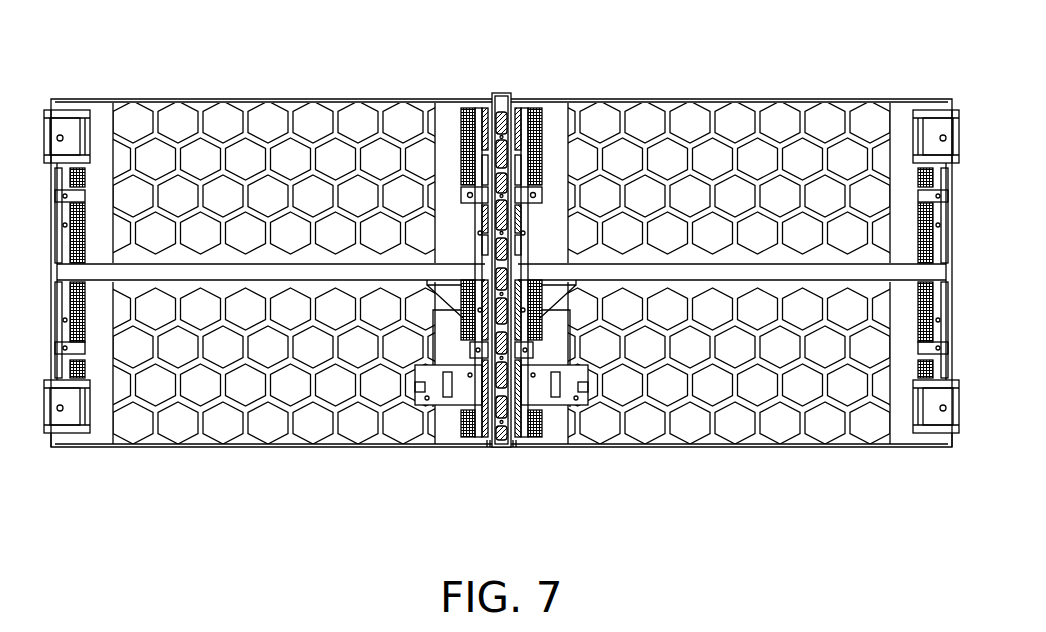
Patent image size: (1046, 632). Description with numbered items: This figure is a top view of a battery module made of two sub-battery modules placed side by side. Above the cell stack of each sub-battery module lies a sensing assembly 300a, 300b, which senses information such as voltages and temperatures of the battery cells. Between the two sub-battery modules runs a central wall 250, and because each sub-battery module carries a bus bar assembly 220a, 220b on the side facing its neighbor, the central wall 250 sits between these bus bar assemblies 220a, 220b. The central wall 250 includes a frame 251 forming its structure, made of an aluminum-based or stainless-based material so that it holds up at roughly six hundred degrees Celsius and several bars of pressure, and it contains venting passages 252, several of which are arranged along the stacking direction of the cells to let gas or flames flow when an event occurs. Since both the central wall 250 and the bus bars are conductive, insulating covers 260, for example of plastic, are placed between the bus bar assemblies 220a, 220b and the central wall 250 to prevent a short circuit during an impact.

The sensing assembly 300a is at (252, 447).
The sensing assembly 300b is at (751, 447).
The bus bar assembly 220a is at (476, 452).
The bus bar assembly 220b is at (527, 452).
The central wall 250 is at (546, 284).
The frame 251 is at (505, 448).
The venting passage 252 is at (508, 176).
The insulating cover 260 is at (483, 127).